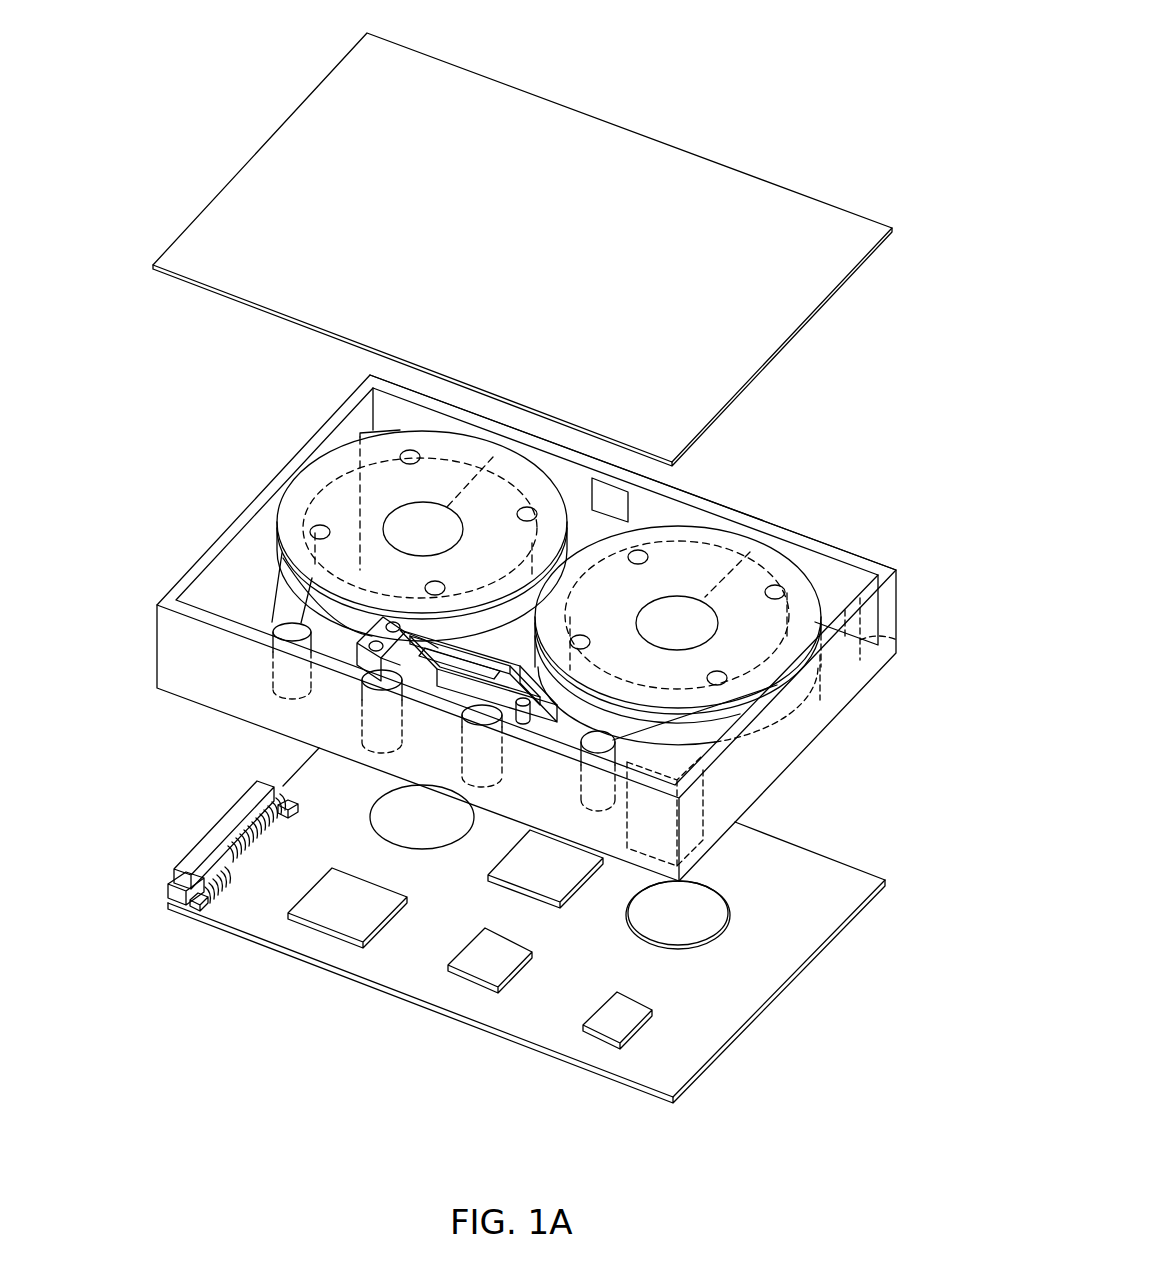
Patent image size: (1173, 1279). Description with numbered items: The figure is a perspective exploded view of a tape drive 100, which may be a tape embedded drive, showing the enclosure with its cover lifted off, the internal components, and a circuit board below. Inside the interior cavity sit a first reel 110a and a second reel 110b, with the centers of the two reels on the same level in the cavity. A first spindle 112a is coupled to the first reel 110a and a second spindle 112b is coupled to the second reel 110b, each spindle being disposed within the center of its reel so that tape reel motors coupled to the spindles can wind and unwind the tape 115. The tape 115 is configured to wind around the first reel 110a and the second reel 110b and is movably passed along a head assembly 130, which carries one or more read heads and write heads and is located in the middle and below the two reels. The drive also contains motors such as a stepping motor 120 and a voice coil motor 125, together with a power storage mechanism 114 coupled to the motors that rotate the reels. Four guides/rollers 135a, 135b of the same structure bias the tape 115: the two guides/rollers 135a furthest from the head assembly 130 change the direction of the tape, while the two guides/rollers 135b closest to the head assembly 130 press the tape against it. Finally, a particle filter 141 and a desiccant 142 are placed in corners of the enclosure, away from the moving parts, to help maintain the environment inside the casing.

The tape drive 100 is at (797, 108).
The first reel 110a is at (478, 437).
The second reel 110b is at (797, 567).
The first spindle 112a is at (412, 522).
The second spindle 112b is at (692, 622).
The power storage mechanism 114 is at (625, 498).
The tape 115 is at (690, 743).
The stepping motor 120 is at (345, 643).
The voice coil motor 125 is at (437, 660).
The head assembly 130 is at (455, 688).
The guides/rollers 135a is at (285, 625).
The guides/rollers 135b is at (380, 677).
The particle filter 141 is at (897, 640).
The desiccant 142 is at (705, 835).